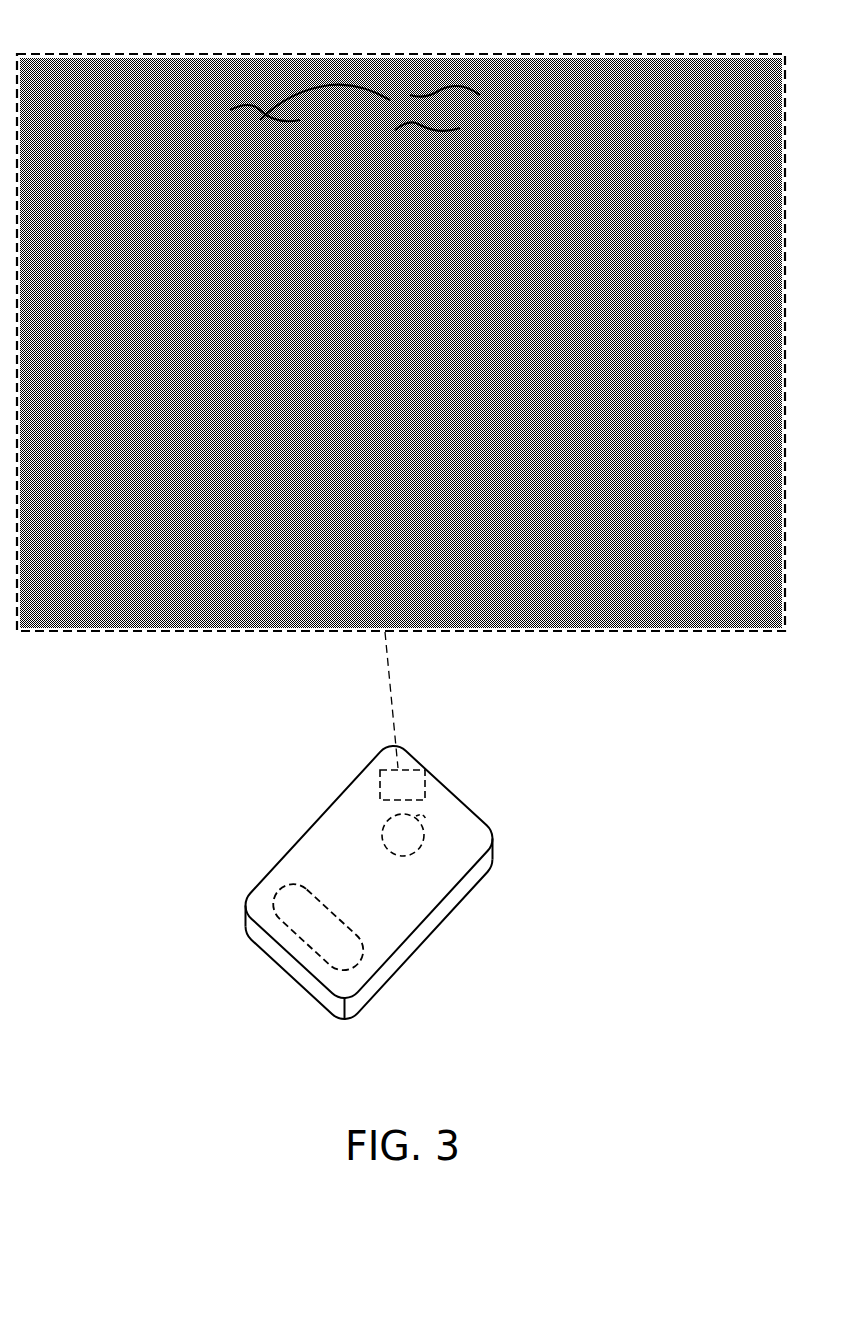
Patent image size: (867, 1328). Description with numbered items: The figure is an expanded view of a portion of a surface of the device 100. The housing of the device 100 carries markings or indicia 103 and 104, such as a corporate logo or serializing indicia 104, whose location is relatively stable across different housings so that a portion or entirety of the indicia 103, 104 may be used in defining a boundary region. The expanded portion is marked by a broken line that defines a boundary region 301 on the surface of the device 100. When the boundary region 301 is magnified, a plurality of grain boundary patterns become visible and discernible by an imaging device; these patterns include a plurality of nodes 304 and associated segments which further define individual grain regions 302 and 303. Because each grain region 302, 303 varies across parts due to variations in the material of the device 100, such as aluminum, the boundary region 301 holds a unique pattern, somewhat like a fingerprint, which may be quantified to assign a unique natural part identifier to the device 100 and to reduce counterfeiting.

The device 100 is at (514, 819).
The indicia 103 is at (429, 849).
The serializing indicia 104 is at (356, 981).
The boundary region 301 is at (738, 56).
The grain region 302 is at (312, 95).
The grain region 303 is at (414, 118).
The node 304 is at (250, 99).